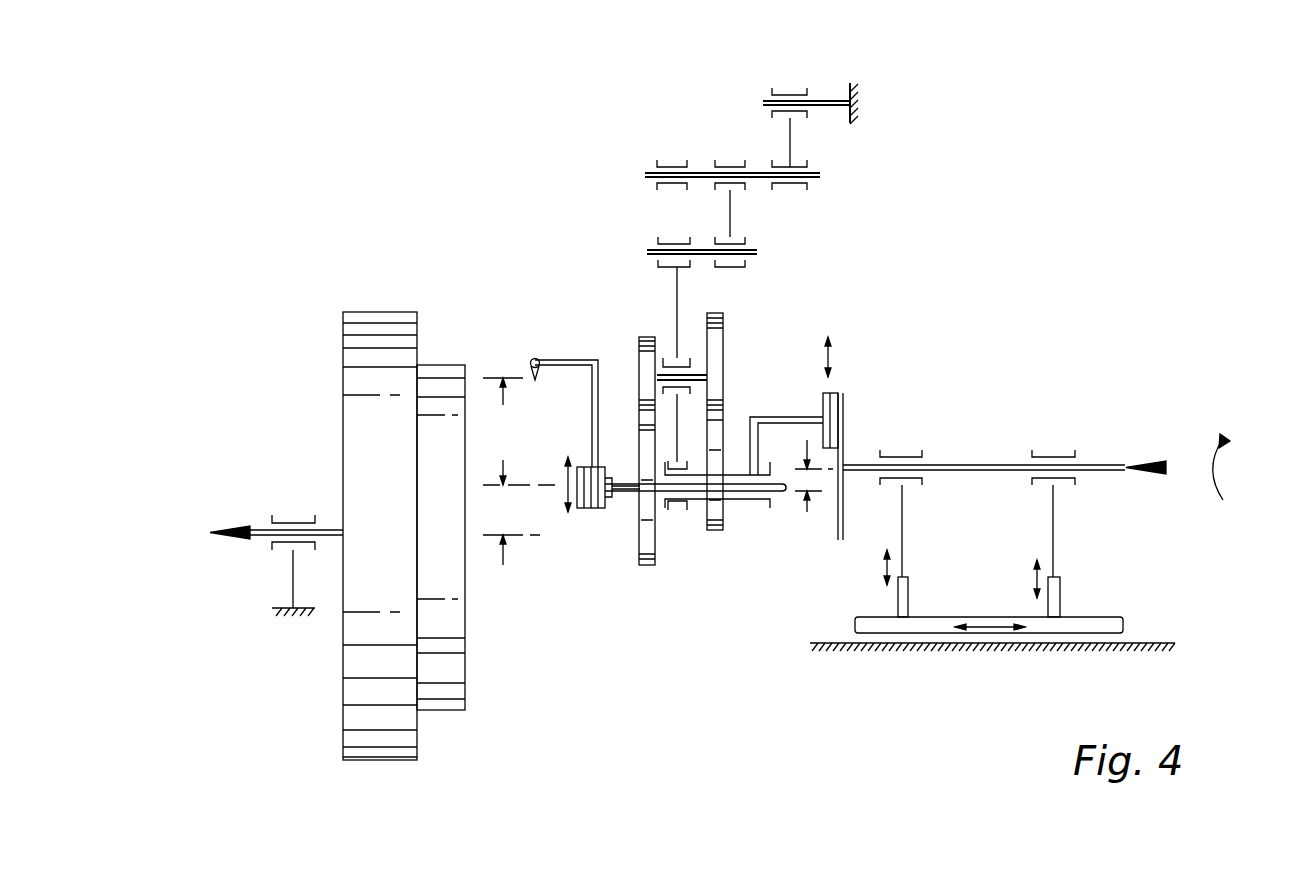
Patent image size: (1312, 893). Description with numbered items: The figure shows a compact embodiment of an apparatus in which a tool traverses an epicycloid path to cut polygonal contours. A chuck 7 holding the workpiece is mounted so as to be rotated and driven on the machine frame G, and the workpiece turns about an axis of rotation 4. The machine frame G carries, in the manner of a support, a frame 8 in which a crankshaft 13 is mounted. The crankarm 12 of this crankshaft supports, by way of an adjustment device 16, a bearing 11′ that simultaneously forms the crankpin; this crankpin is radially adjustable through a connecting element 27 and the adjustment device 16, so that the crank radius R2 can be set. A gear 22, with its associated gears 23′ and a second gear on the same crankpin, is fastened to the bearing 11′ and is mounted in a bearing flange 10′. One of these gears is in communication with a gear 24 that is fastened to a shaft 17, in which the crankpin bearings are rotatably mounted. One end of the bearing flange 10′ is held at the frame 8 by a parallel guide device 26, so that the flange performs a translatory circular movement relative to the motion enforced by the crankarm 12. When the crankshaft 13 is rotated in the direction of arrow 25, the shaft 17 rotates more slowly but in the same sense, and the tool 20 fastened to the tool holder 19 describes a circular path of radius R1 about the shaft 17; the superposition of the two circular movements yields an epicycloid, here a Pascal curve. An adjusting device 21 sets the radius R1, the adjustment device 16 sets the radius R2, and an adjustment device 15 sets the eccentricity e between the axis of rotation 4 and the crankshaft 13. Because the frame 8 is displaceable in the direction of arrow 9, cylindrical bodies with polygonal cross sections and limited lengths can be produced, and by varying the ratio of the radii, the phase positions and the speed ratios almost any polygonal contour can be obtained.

The axis of rotation 4 is at (245, 530).
The chuck 7 is at (372, 318).
The frame 8 is at (855, 85).
The arrow 9 is at (995, 633).
The bearing flange 10′ is at (677, 303).
The bearing 11′ is at (740, 500).
The crankarm 12 is at (845, 440).
The crankshaft 13 is at (982, 465).
The adjustment device 15 is at (896, 591).
The adjustment device 16 is at (838, 393).
The shaft 17 is at (620, 493).
The tool holder 19 is at (577, 459).
The tool 20 is at (532, 368).
The adjusting device 21 is at (597, 510).
The gear 22 is at (722, 522).
The gear 23′ is at (723, 345).
The gear 24 is at (638, 547).
The arrow 25 is at (1220, 470).
The parallel guide device 26 is at (887, 102).
The connecting element 27 is at (776, 417).
The machine frame G is at (808, 645).
The radius R1 is at (519, 431).
The crank radius R2 is at (810, 478).
The eccentricity e is at (511, 529).